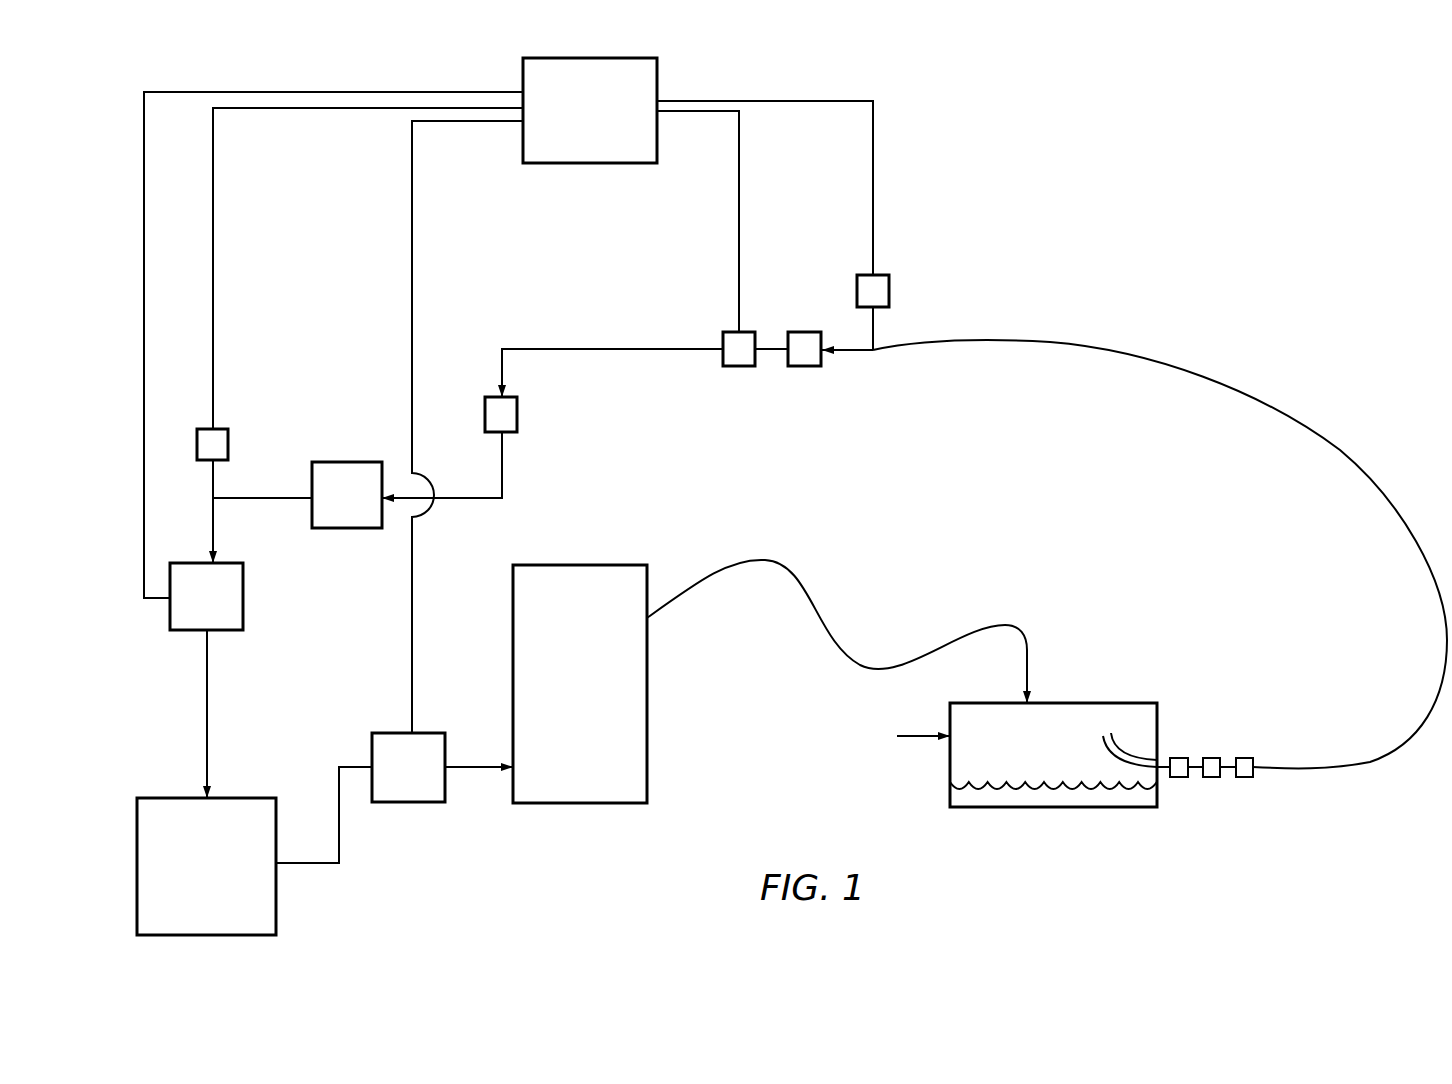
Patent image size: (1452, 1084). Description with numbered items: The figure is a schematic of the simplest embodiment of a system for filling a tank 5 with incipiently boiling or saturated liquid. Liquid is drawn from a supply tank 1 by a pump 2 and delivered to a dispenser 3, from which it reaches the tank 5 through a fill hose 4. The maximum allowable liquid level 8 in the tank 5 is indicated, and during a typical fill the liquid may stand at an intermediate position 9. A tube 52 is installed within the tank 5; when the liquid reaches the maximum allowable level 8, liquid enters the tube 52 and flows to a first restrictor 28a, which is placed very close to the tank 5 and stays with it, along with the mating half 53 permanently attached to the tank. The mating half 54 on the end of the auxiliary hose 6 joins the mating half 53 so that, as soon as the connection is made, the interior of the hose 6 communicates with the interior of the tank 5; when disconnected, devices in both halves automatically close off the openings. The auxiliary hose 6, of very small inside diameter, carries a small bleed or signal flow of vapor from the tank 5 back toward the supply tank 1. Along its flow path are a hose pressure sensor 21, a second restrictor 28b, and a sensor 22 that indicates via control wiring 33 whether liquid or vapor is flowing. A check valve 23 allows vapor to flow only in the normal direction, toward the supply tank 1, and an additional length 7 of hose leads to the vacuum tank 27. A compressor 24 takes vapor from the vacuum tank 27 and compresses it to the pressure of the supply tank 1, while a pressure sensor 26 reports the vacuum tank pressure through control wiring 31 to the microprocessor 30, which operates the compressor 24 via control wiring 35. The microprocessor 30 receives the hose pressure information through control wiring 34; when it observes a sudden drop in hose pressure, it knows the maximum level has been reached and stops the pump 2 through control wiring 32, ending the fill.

The supply tank 1 is at (218, 879).
The pump 2 is at (419, 778).
The dispenser 3 is at (589, 696).
The fill hose 4 is at (839, 628).
The tank 5 is at (1053, 779).
The auxiliary hose 6 is at (1134, 554).
The additional length of hose 7 is at (472, 467).
The maximum allowable liquid level 8 is at (901, 718).
The intermediate position 9 is at (950, 783).
The hose pressure sensor 21 is at (909, 281).
The sensor 22 is at (643, 371).
The check valve 23 is at (539, 409).
The compressor 24 is at (221, 606).
The pressure sensor 26 is at (250, 436).
The vacuum tank 27 is at (363, 511).
The first restrictor 28a is at (1204, 741).
The second restrictor 28b is at (832, 378).
The microprocessor 30 is at (603, 123).
The control wiring 31 is at (366, 335).
The control wiring 32 is at (467, 427).
The control wiring 33 is at (698, 221).
The control wiring 34 is at (807, 225).
The control wiring 35 is at (333, 345).
The tube 52 is at (1101, 746).
The mating half 53 is at (1227, 795).
The mating half 54 is at (1270, 789).